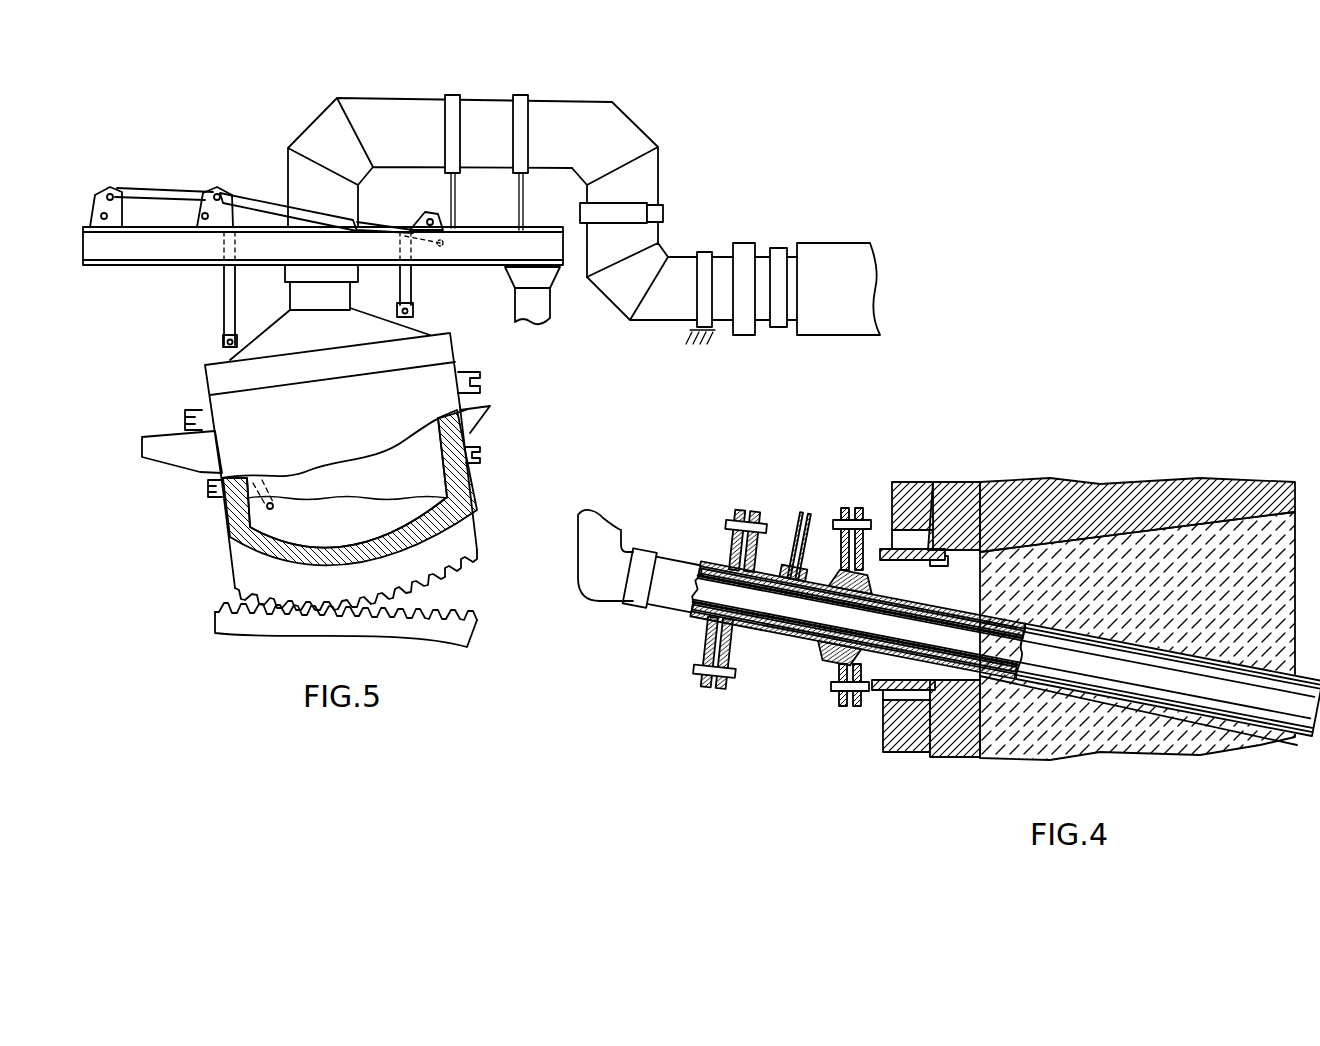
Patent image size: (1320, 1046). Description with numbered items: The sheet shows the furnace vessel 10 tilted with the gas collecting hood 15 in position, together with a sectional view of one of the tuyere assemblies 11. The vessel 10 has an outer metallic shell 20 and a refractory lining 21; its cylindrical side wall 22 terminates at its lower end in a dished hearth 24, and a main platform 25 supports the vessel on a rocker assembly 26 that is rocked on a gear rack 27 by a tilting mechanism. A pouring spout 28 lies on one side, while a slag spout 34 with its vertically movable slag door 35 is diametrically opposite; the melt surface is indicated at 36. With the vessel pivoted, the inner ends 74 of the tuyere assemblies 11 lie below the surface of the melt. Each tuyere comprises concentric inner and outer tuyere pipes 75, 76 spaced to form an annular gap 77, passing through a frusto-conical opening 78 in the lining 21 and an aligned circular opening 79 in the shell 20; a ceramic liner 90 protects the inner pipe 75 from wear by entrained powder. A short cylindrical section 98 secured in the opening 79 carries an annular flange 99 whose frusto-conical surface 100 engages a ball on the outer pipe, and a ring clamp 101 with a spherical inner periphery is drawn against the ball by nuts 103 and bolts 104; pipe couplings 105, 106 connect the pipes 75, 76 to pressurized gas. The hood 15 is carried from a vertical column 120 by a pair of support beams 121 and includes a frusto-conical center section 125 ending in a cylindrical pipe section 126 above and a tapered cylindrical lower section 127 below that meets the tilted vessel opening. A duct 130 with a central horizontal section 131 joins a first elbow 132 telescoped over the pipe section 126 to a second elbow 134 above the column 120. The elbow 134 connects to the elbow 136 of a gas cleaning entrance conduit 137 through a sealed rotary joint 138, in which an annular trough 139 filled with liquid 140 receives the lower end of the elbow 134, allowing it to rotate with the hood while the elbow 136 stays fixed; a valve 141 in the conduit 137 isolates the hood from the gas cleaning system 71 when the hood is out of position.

In FIG. 5, the furnace vessel 10 is at (165, 497).
In FIG. 5, the tuyere assembly 11 is at (268, 480).
In FIG. 5, the gas collecting hood 15 is at (373, 309).
In FIG. 5, the outer metallic shell 20 is at (222, 512).
In FIG. 4, the outer metallic shell 20 is at (947, 482).
In FIG. 5, the refractory lining 21 is at (472, 433).
In FIG. 5, the cylindrical side wall 22 is at (250, 172).
In FIG. 5, the dished hearth 24 is at (412, 526).
In FIG. 5, the main platform 25 is at (482, 460).
In FIG. 5, the rocker assembly 26 is at (462, 547).
In FIG. 5, the gear rack 27 is at (462, 630).
In FIG. 5, the pouring spout 28 is at (142, 437).
In FIG. 5, the slag spout 34 is at (477, 408).
In FIG. 5, the slag door 35 is at (470, 373).
In FIG. 5, the molten bath 36 is at (383, 524).
In FIG. 5, the gas cleaning system 71 is at (850, 256).
In FIG. 5, the inner ends of tuyere assemblies 74 is at (268, 506).
In FIG. 4, the inner tuyere pipe 75 is at (812, 585).
In FIG. 4, the outer tuyere pipe 76 is at (752, 507).
In FIG. 4, the annular gap 77 is at (788, 632).
In FIG. 4, the frusto-conical opening 78 is at (1137, 537).
In FIG. 4, the circular opening 79 is at (963, 553).
In FIG. 4, the ceramic liner 90 is at (690, 605).
In FIG. 4, the short cylindrical section 98 is at (913, 688).
In FIG. 4, the annular flange 99 is at (848, 718).
In FIG. 4, the frusto-conical surface 100 is at (882, 555).
In FIG. 4, the ring clamp 101 is at (843, 507).
In FIG. 4, the nuts 103 is at (823, 662).
In FIG. 4, the bolts 104 is at (870, 717).
In FIG. 4, the pipe coupling 105 is at (645, 550).
In FIG. 4, the pipe coupling 106 is at (762, 545).
In FIG. 5, the vertical column 120 is at (552, 313).
In FIG. 5, the support beams 121 is at (440, 266).
In FIG. 5, the frusto-conical center section 125 is at (337, 342).
In FIG. 5, the cylindrical pipe section 126 is at (300, 296).
In FIG. 5, the tapered cylindrical lower section 127 is at (440, 347).
In FIG. 5, the duct 130 is at (516, 80).
In FIG. 5, the central horizontal section 131 is at (482, 172).
In FIG. 5, the first elbow 132 is at (380, 98).
In FIG. 5, the second elbow 134 is at (655, 121).
In FIG. 5, the elbow 136 is at (642, 286).
In FIG. 5, the gas cleaning entrance conduit 137 is at (777, 250).
In FIG. 5, the sealed rotary joint 138 is at (690, 203).
In FIG. 5, the annular trough 139 is at (664, 220).
In FIG. 5, the liquid 140 is at (666, 206).
In FIG. 5, the valve 141 is at (740, 330).